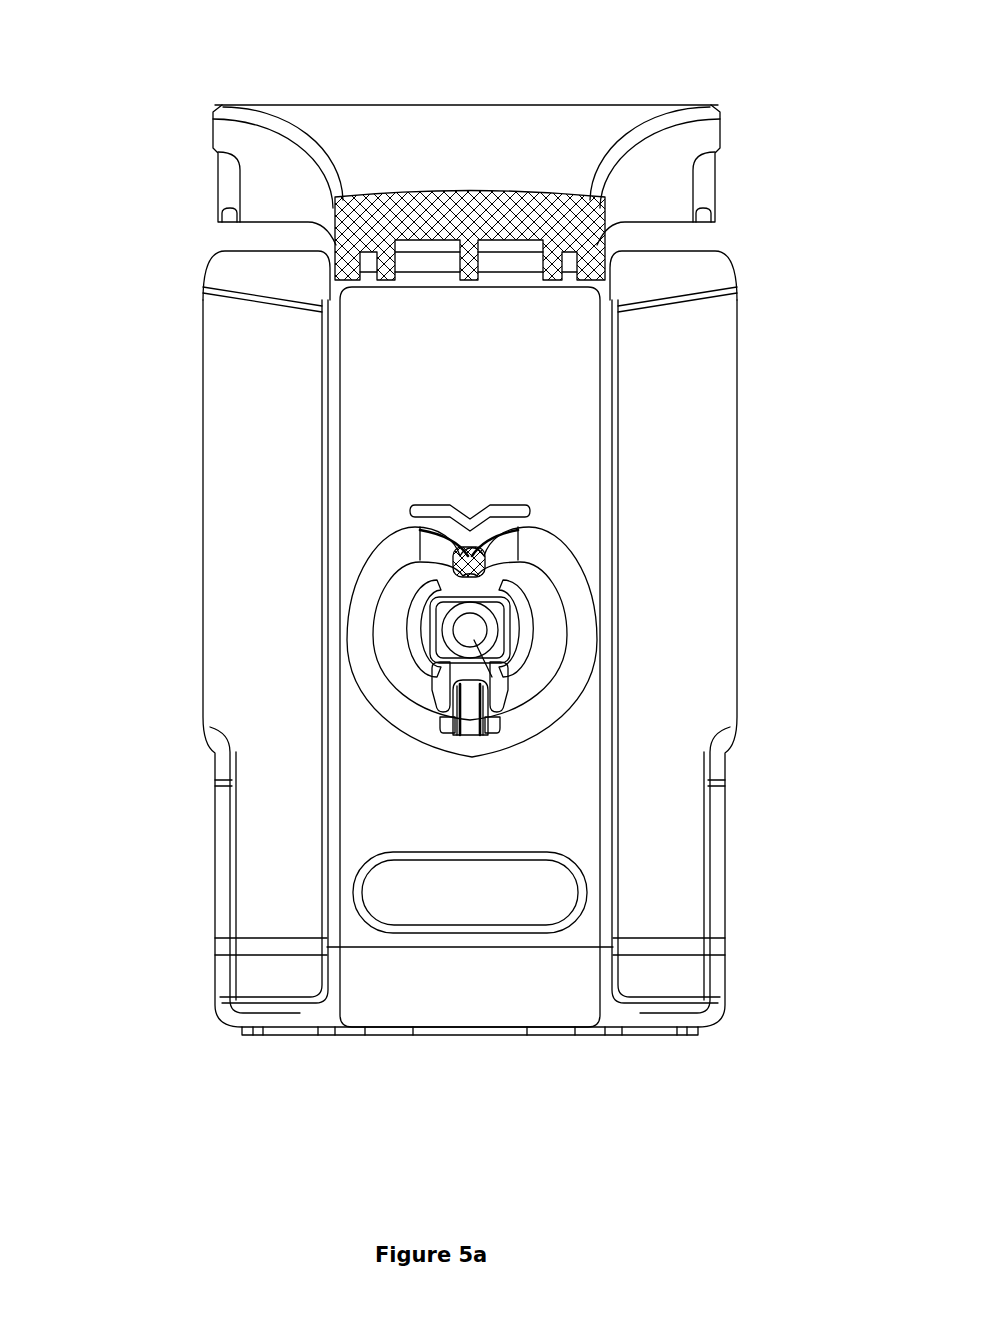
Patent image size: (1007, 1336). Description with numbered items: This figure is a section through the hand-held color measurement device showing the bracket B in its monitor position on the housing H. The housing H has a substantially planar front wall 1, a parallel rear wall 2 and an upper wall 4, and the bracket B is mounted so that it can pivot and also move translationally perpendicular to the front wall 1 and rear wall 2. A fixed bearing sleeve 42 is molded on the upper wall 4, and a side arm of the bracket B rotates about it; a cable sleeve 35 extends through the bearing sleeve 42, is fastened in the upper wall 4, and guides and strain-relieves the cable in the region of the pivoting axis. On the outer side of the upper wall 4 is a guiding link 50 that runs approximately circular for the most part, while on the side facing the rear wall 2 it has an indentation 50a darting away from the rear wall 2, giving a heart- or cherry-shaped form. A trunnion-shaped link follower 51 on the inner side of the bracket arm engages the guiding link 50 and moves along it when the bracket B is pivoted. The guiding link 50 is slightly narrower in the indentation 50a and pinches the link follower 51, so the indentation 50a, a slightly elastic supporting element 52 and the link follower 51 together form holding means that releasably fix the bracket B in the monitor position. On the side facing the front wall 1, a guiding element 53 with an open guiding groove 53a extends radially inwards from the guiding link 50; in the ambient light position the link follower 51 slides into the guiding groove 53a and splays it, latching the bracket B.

The bracket B is at (660, 98).
The rear wall 2 is at (632, 248).
The upper wall 4 is at (375, 412).
The housing H is at (197, 790).
The front wall 1 is at (667, 1037).
The guiding link 50 is at (395, 717).
The supporting element 52 is at (473, 507).
The indentation 50a is at (498, 548).
The link follower 51 is at (456, 552).
The bearing sleeve 42 is at (523, 638).
The cable sleeve 35 is at (440, 632).
The guiding element 53 is at (450, 727).
The guiding groove 53a is at (468, 720).